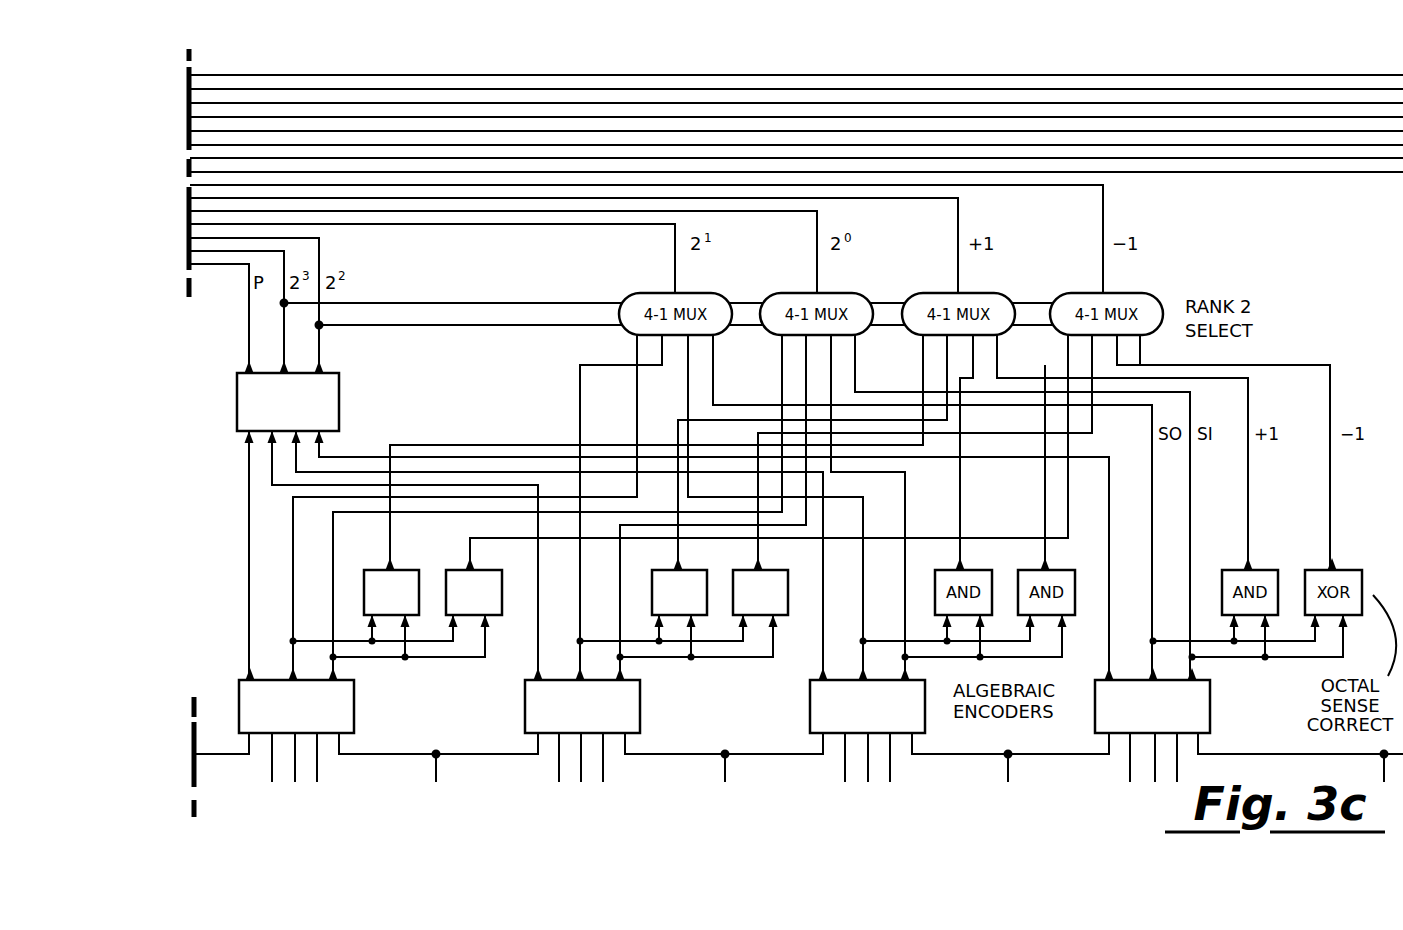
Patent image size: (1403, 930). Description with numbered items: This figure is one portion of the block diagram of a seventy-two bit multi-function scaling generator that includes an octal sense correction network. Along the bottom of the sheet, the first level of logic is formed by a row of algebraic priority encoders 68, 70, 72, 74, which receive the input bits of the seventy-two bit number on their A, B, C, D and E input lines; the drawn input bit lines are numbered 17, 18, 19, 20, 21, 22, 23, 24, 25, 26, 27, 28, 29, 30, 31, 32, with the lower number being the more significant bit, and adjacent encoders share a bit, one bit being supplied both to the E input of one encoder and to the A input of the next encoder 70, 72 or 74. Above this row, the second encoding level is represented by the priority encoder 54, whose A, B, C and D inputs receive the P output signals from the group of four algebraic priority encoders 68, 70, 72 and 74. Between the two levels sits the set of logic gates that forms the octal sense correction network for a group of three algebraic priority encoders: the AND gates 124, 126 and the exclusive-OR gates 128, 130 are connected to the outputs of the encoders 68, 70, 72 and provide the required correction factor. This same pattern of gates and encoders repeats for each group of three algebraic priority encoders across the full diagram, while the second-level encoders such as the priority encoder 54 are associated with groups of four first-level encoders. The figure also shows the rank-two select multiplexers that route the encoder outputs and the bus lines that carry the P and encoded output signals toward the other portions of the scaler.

The priority encoder 54 is at (237, 398).
The algebraic priority encoder 68 is at (354, 705).
The algebraic priority encoder 70 is at (640, 705).
The algebraic priority encoder 72 is at (925, 710).
The algebraic priority encoder 74 is at (1210, 705).
The AND gate 124 is at (405, 568).
The AND gate 126 is at (771, 570).
The exclusive-OR gate 128 is at (484, 570).
The exclusive-OR gate 130 is at (690, 570).
The output line 17 is at (272, 769).
The output line 18 is at (296, 769).
The output line 19 is at (319, 769).
The output line 20 is at (436, 778).
The output line 21 is at (553, 769).
The output line 22 is at (581, 769).
The output line 23 is at (611, 769).
The output line 24 is at (724, 778).
The output line 25 is at (833, 769).
The output line 26 is at (866, 769).
The output line 27 is at (900, 769).
The output line 28 is at (1010, 778).
The output line 29 is at (1126, 769).
The output line 30 is at (1157, 769).
The output line 31 is at (1188, 769).
The output line 32 is at (1385, 778).